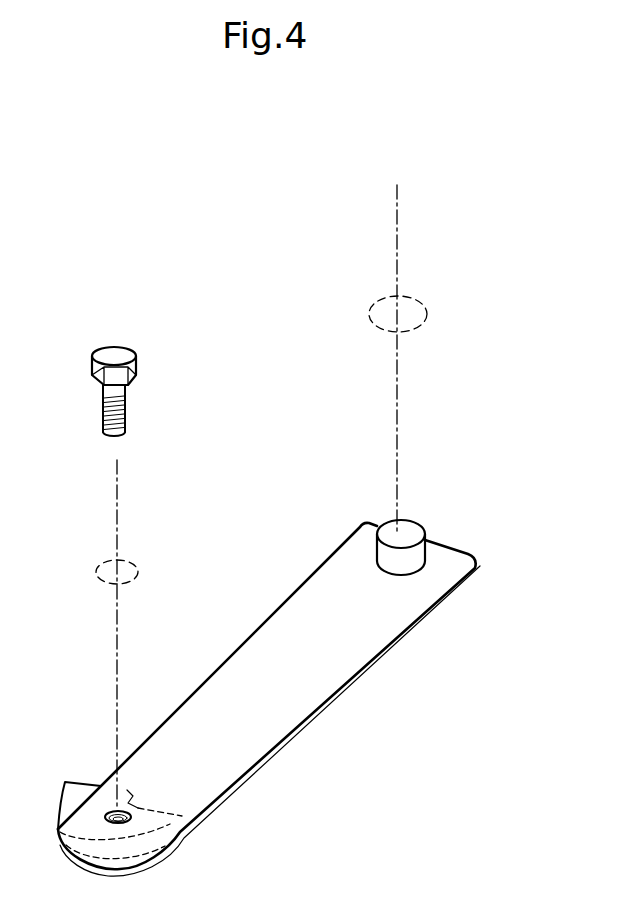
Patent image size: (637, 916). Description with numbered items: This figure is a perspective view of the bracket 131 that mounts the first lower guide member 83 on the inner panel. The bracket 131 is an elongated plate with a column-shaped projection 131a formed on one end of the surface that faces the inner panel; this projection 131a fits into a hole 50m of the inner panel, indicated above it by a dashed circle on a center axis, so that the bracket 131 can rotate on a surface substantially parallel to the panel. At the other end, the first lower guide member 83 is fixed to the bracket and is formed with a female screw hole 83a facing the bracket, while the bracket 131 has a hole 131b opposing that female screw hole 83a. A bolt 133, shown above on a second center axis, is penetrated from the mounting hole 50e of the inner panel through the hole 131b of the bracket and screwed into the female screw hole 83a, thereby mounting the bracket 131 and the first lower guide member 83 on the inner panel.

The bolt 133 is at (126, 358).
The mounting hole 50e is at (133, 563).
The hole 50m is at (432, 307).
The bracket 131 is at (411, 626).
The column-shaped projection 131a is at (411, 532).
The hole 131b is at (131, 813).
The first lower guide member 83 is at (79, 792).
The female screw hole 83a is at (127, 822).